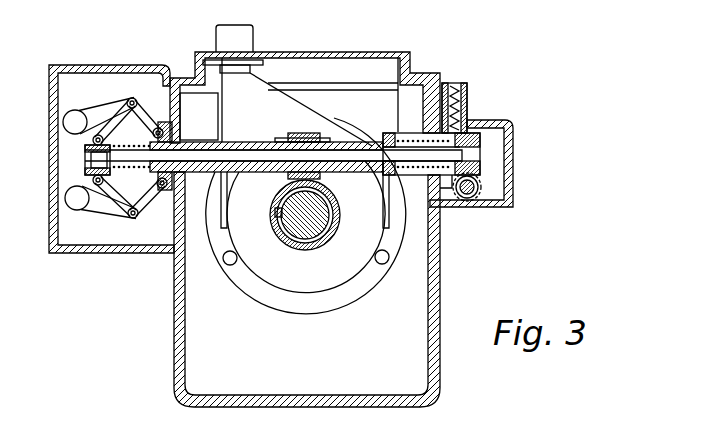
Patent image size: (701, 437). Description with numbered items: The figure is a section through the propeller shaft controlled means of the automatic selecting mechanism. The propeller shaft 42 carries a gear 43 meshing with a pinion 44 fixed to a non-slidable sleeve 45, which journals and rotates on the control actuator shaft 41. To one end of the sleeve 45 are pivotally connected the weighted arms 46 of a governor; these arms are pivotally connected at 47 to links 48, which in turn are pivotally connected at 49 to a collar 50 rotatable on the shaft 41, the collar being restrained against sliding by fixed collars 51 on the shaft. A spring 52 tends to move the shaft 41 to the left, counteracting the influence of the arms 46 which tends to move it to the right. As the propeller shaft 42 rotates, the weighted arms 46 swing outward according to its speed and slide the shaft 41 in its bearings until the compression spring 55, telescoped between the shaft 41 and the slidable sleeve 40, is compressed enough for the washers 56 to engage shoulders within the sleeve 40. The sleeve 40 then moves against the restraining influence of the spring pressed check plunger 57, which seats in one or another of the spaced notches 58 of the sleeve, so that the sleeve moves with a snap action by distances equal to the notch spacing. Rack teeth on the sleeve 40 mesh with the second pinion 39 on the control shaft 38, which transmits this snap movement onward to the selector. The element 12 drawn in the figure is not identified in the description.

The conduit fitting 12 is at (237, 66).
The control shaft 38 is at (468, 197).
The second pinion 39 is at (483, 183).
The slidable sleeve 40 is at (440, 190).
The control actuator shaft 41 is at (255, 162).
The propeller shaft 42 is at (320, 222).
The gear 43 is at (333, 213).
The pinion 44 is at (300, 133).
The non-slidable sleeve 45 is at (248, 142).
The weighted arms 46 is at (150, 204).
The pivot connection 47 is at (132, 217).
The links 48 is at (108, 183).
The pivot connection 49 is at (97, 136).
The collar 50 is at (88, 160).
The fixed collars 51 is at (92, 175).
The spring 52 is at (127, 146).
The compression spring 55 is at (403, 133).
The washers 56 is at (480, 160).
The spring pressed check plunger 57 is at (462, 118).
The spaced notches 58 is at (441, 128).